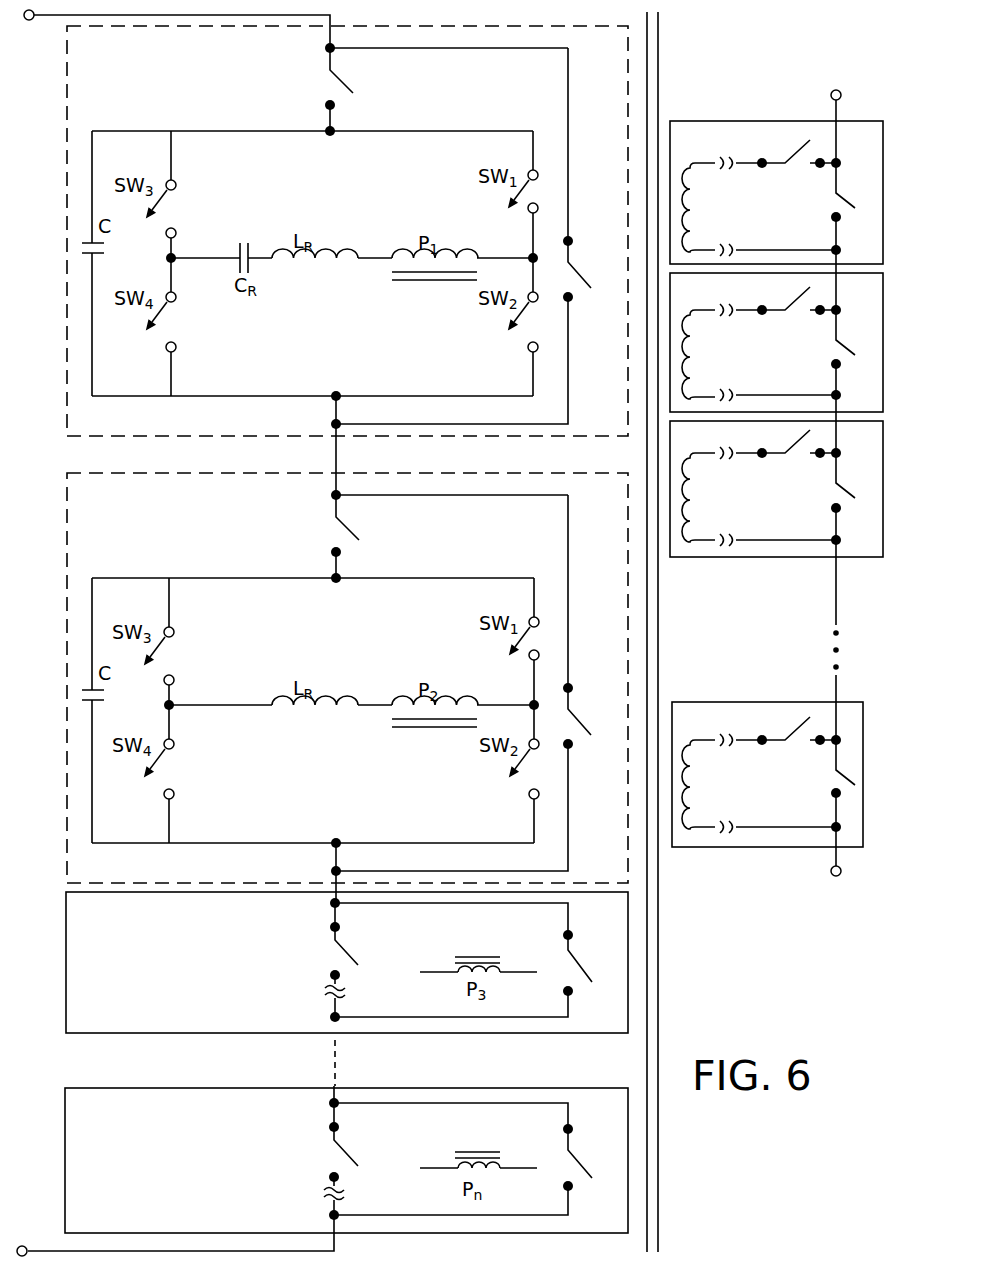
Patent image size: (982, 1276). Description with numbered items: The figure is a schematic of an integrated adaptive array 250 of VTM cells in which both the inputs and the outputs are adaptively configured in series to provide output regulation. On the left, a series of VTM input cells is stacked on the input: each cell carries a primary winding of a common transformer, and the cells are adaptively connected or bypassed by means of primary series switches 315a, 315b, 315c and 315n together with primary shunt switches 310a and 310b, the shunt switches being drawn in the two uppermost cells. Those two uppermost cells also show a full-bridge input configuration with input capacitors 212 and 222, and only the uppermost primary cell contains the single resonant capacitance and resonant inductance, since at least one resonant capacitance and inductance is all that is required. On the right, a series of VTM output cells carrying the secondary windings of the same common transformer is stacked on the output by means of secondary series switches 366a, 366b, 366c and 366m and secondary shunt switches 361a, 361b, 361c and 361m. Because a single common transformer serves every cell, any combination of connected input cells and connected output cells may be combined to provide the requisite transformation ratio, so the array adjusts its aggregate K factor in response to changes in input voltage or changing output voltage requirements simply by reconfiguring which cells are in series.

The capacitor of first power transfer module 212 is at (125, 254).
The capacitor of second power transfer module 222 is at (125, 701).
The integrated adaptive array 250 is at (776, 542).
The primary shunt switch 310a is at (582, 270).
The primary shunt switch 310b is at (582, 717).
The primary series switch 315a is at (343, 80).
The primary series switch 315b is at (349, 527).
The primary series switch 315c is at (355, 963).
The primary series switch 315n is at (355, 1163).
The secondary shunt switch 361a is at (842, 200).
The secondary shunt switch 361b is at (842, 347).
The secondary shunt switch 361c is at (842, 491).
The secondary shunt switch 361m is at (812, 783).
The secondary series switch 366a is at (806, 140).
The secondary series switch 366b is at (806, 287).
The secondary series switch 366c is at (806, 430).
The secondary series switch 366m is at (806, 717).